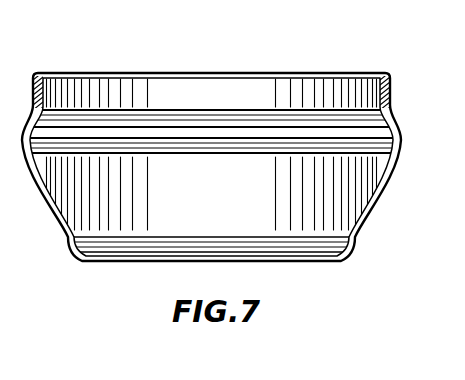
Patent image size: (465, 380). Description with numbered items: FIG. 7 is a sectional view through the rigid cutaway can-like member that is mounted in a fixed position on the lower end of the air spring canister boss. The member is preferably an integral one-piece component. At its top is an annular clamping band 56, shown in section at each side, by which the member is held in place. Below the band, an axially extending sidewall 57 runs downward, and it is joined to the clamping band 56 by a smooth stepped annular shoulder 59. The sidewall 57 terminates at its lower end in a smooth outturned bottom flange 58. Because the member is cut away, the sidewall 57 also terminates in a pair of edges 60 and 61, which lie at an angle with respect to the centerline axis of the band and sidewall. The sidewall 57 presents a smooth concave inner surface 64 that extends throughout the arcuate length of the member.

The annular clamping band 56 is at (31, 94).
The sidewall 57 is at (226, 196).
The outturned bottom flange 58 is at (160, 252).
The stepped annular shoulder 59 is at (247, 130).
The edge 60 is at (40, 173).
The edge 61 is at (380, 183).
The concave inner surface 64 is at (297, 208).